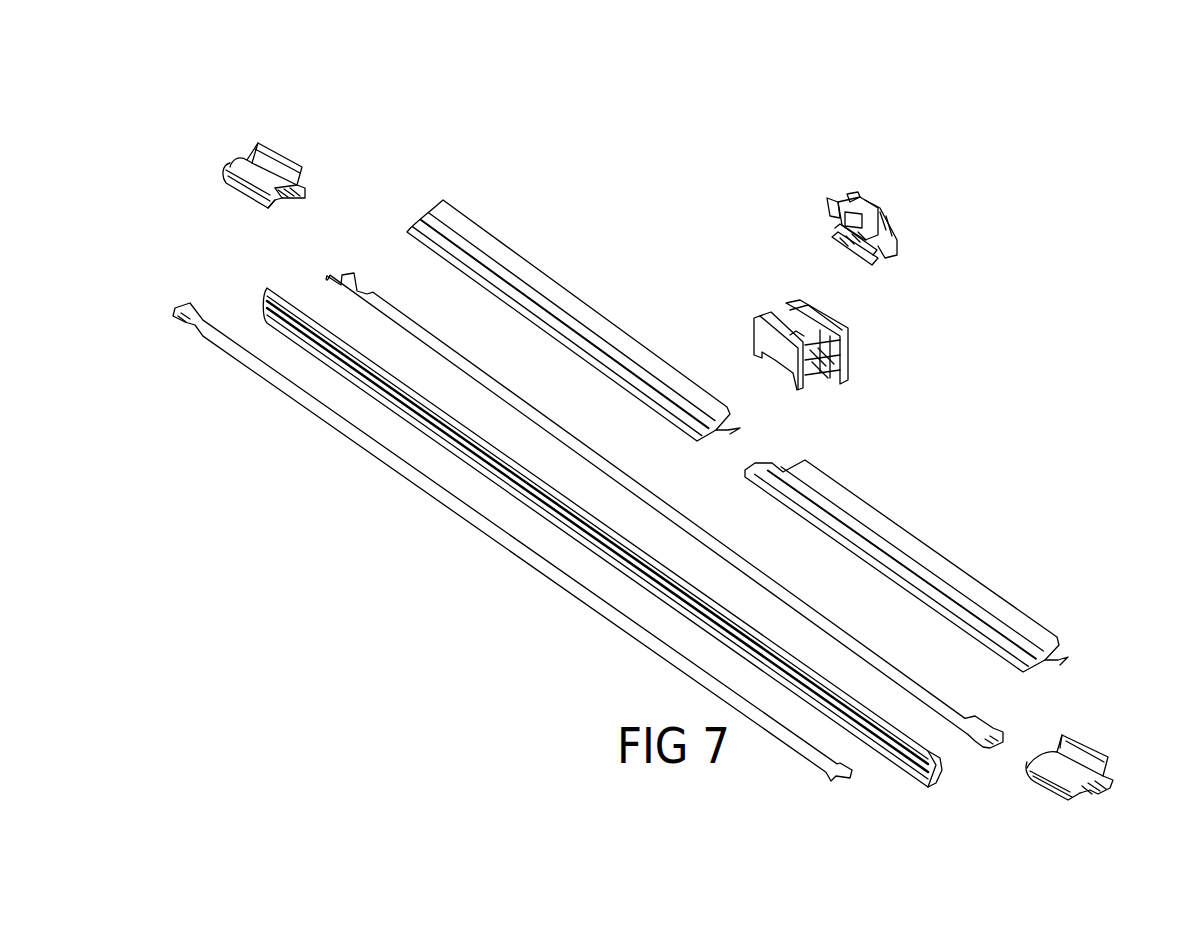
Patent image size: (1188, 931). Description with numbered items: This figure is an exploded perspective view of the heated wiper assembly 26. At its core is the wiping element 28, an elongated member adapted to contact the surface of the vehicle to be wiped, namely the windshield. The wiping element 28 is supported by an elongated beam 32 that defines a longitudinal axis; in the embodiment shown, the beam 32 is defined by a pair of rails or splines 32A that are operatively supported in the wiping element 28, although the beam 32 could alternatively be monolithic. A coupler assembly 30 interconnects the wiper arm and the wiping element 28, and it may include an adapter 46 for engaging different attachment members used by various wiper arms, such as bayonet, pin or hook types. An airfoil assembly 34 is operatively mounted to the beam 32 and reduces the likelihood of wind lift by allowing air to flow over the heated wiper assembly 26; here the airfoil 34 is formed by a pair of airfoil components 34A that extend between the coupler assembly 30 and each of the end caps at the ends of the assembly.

The heated wiper assembly 26 is at (1068, 358).
The wiping element 28 is at (826, 673).
The coupler assembly 30 is at (858, 337).
The elongated beam 32 is at (328, 273).
The rails 32A is at (646, 487).
The airfoil assembly 34 is at (915, 538).
The airfoil components 34A is at (438, 203).
The adapter 46 is at (884, 235).